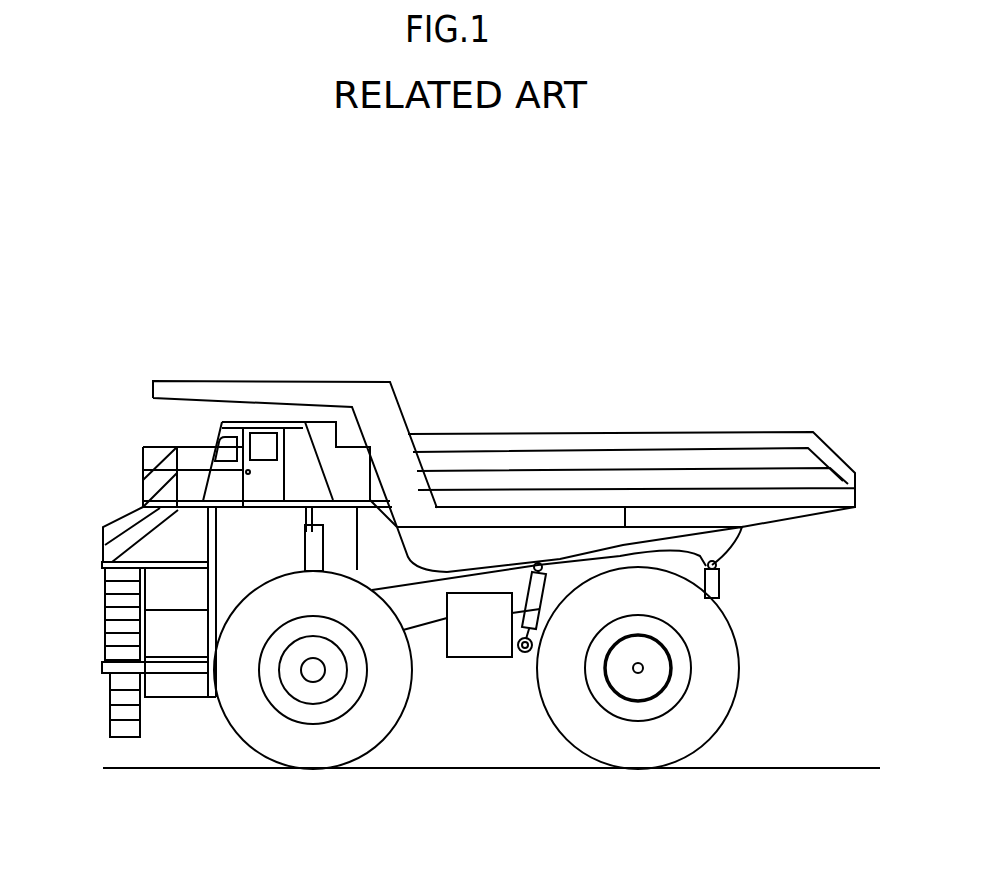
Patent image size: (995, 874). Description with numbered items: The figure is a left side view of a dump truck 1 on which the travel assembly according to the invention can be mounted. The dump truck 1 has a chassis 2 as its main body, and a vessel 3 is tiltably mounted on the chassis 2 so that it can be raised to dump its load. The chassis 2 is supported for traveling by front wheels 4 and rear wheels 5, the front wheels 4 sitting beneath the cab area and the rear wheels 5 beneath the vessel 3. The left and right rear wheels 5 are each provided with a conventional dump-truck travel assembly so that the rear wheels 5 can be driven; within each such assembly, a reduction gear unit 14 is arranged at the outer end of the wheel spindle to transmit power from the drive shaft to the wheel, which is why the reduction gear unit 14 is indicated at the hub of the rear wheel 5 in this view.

The dump truck 1 is at (198, 383).
The chassis 2 is at (428, 615).
The vessel 3 is at (558, 440).
The front wheels 4 is at (315, 757).
The rear wheels 5 is at (642, 750).
The reduction gear unit 14 is at (657, 673).